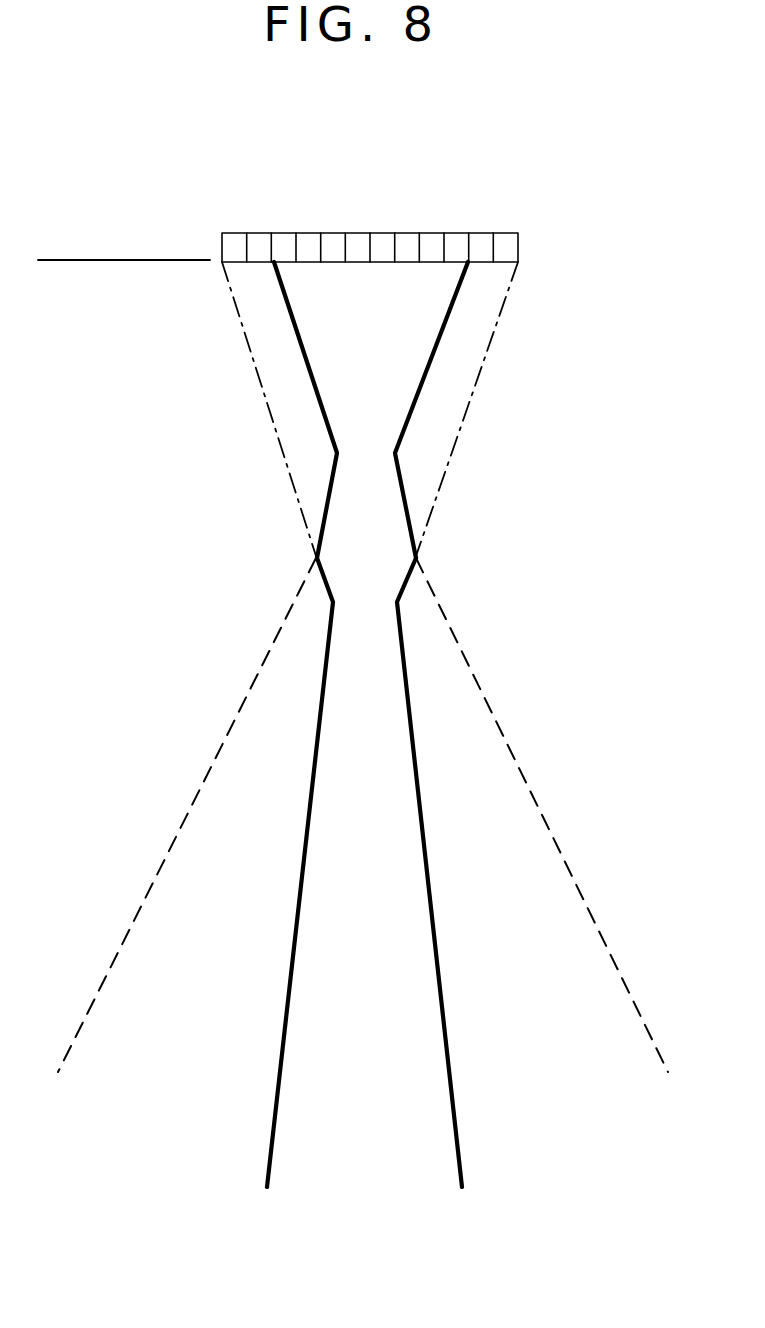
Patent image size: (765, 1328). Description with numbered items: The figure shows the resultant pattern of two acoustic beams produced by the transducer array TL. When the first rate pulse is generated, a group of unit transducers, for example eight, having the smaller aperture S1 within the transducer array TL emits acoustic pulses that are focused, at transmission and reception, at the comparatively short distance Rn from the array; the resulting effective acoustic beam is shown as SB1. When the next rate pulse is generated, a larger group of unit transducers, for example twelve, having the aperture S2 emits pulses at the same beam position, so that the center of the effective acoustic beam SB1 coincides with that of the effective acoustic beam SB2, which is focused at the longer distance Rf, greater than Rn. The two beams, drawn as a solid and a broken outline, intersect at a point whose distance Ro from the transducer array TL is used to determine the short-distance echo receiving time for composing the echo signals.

The transducer array TL is at (518, 250).
The aperture S1 is at (469, 223).
The aperture S2 is at (518, 223).
The effective acoustic beam SB1 is at (435, 355).
The effective acoustic beam SB2 is at (462, 427).
The beam focusing distance Rn is at (168, 262).
The distance to intersecting point Ro is at (118, 262).
The beam focusing distance Rf is at (348, 716).